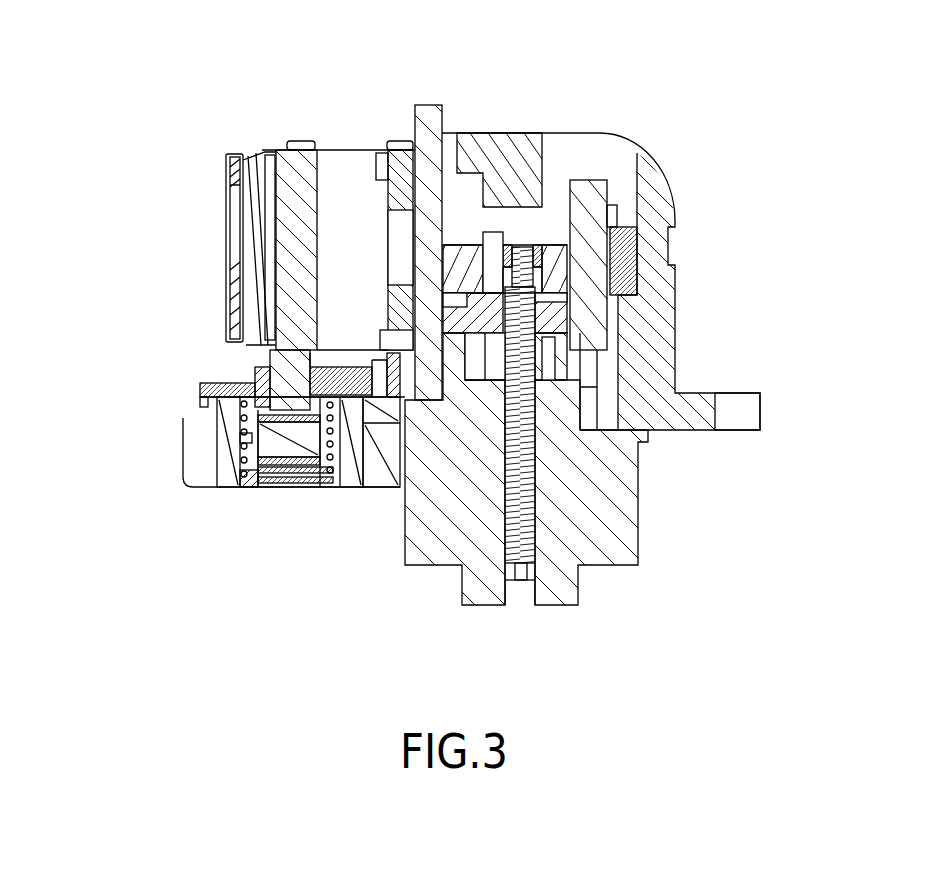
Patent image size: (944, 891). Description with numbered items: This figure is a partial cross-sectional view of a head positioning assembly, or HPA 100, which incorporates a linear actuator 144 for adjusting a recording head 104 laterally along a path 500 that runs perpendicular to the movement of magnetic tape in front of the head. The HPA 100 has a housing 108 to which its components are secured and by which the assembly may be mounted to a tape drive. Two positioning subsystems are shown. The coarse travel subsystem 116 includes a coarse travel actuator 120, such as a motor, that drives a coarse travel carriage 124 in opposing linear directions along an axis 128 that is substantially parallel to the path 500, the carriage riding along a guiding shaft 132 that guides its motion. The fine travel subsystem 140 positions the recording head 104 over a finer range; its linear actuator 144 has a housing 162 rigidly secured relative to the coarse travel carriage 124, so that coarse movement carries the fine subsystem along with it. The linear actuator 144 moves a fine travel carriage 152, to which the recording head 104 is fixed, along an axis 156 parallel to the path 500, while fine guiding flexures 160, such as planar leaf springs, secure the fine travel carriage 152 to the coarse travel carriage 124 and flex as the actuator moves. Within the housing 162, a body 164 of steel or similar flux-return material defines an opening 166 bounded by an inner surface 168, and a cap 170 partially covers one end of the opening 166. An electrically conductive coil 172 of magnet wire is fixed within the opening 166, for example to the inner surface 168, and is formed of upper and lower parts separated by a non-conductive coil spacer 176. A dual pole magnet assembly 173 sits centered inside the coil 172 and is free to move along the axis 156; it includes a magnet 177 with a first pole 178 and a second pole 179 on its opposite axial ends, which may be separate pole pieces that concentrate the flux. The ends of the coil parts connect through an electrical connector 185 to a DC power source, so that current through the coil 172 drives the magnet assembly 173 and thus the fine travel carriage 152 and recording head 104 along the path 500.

The HPA 100 is at (612, 100).
The recording head 104 is at (226, 228).
The housing 108 is at (738, 388).
The coarse travel subsystem 116 is at (675, 560).
The coarse travel actuator 120 is at (629, 513).
The coarse travel carriage 124 is at (556, 243).
The axis 128 is at (520, 607).
The guiding shaft 132 is at (443, 118).
The fine travel subsystem 140 is at (150, 378).
The linear actuator 144 is at (215, 497).
The fine travel carriage 152 is at (319, 238).
The axis 156 is at (288, 108).
The fine guiding flexures 160 is at (345, 150).
The housing 162 is at (365, 450).
The body 164 is at (380, 473).
The opening 166 is at (322, 497).
The inner surface 168 is at (250, 492).
The cap 170 is at (203, 388).
The electrically conductive coil 172 is at (247, 384).
The dual pole magnet assembly 173 is at (325, 436).
The coil spacer 176 is at (347, 437).
The magnet 177 is at (280, 415).
The first pole 178 is at (297, 412).
The second pole 179 is at (280, 485).
The electrical connector 185 is at (183, 480).
The path 500 is at (236, 66).